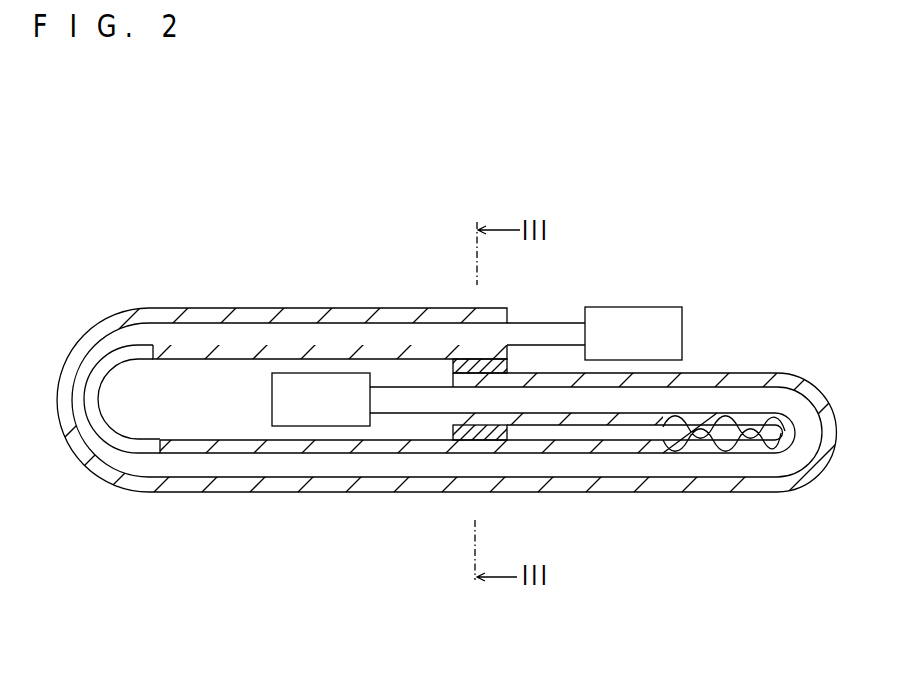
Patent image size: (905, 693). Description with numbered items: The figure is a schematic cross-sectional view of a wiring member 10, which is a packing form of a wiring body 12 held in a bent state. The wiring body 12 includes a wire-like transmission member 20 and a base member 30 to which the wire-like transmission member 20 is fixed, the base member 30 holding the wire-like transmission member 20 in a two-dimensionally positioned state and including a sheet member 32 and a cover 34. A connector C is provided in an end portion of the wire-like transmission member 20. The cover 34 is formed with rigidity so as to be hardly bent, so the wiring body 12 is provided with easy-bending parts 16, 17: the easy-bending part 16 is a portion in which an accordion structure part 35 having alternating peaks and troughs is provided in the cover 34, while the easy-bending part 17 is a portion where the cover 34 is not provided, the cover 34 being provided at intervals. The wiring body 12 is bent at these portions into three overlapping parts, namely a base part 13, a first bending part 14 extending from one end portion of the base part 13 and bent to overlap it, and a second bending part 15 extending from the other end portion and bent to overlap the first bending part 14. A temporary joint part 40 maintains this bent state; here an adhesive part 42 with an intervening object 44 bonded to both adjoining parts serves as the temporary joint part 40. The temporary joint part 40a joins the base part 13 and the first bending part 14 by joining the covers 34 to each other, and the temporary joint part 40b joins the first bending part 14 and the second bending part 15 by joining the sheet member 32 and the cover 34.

The wiring member 10 is at (135, 137).
The wiring body 12 is at (152, 296).
The base part 13 is at (610, 502).
The first bending part 14 is at (719, 365).
The second bending part 15 is at (306, 296).
The easy-bending part 16 is at (757, 407).
The easy-bending part 17 is at (113, 401).
The wire-like transmission member 20 is at (126, 460).
The base member 30 is at (325, 553).
The sheet member 32 is at (302, 494).
The cover 34 is at (198, 357).
The accordion structure part 35 is at (727, 445).
The temporary joint part 40 is at (442, 401).
The temporary joint part 40a is at (450, 432).
The temporary joint part 40b is at (452, 366).
The adhesive part 42 is at (476, 400).
The intervening object 44 is at (493, 440).
The connector C is at (648, 307).